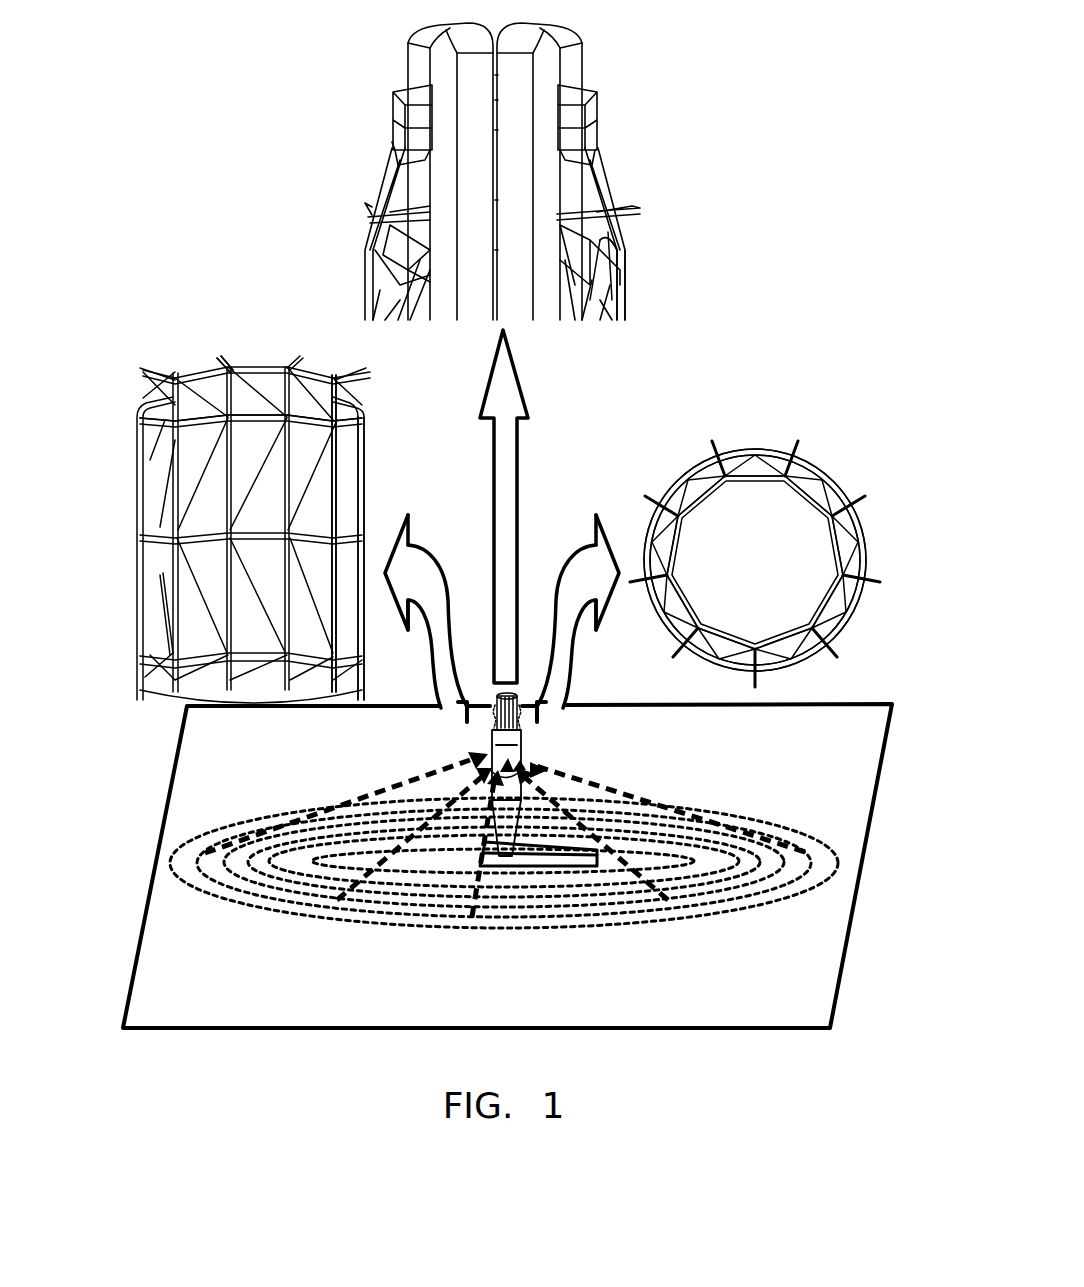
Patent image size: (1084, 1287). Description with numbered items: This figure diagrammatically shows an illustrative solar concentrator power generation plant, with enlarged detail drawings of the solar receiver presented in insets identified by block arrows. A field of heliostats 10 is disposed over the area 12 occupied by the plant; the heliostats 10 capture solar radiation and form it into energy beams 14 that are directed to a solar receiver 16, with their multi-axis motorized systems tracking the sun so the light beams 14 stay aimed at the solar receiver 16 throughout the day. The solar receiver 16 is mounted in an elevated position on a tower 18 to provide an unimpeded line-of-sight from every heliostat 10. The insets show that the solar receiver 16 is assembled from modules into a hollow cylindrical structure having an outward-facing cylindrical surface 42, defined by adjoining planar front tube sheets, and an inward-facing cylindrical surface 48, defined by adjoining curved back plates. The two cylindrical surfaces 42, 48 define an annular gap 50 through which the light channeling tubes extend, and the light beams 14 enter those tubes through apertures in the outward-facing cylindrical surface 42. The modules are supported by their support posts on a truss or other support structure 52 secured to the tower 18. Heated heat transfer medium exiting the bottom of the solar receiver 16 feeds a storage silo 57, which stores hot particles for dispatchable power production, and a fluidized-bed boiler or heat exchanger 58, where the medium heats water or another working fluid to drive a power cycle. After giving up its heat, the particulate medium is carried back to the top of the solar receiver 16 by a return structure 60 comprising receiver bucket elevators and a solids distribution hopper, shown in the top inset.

The heliostats 10 is at (262, 810).
The area 12 is at (160, 826).
The energy beams 14 is at (585, 775).
The solar receiver 16 is at (170, 345).
The tower 18 is at (610, 796).
The outward-facing cylindrical surface 42 is at (368, 445).
The inward-facing cylindrical surface 48 is at (345, 455).
The annular gap 50 is at (374, 393).
The support structure 52 is at (204, 368).
The storage silo 57 is at (502, 858).
The fluidized-bed boiler or heat exchanger 58 is at (568, 860).
The return structure 60 is at (360, 119).